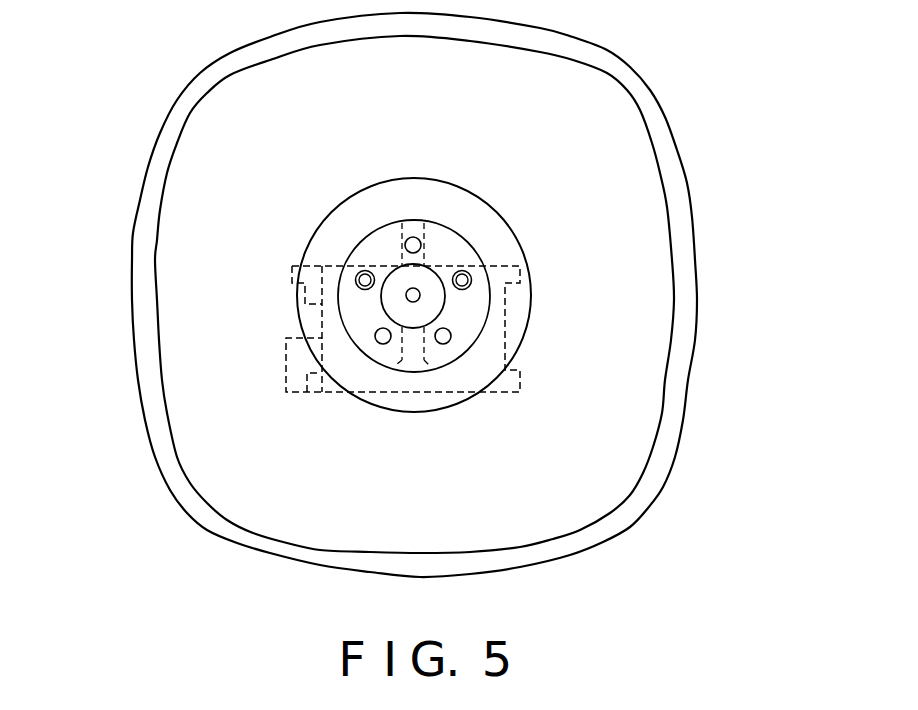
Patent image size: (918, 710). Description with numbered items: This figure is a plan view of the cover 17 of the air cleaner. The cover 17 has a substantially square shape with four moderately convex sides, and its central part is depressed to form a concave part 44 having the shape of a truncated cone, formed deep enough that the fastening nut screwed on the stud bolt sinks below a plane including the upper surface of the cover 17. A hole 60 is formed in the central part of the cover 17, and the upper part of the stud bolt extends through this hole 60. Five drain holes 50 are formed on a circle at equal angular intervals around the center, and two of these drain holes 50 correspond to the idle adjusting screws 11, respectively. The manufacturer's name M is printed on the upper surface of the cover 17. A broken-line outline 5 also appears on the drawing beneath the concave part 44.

The cover 17 is at (131, 277).
The manufacturer's name M is at (472, 82).
The concave part 44 is at (343, 358).
The hole 60 is at (417, 289).
The drain holes 50 is at (407, 240).
The idle adjusting screws 11 is at (357, 275).
The bracket 5 is at (507, 332).